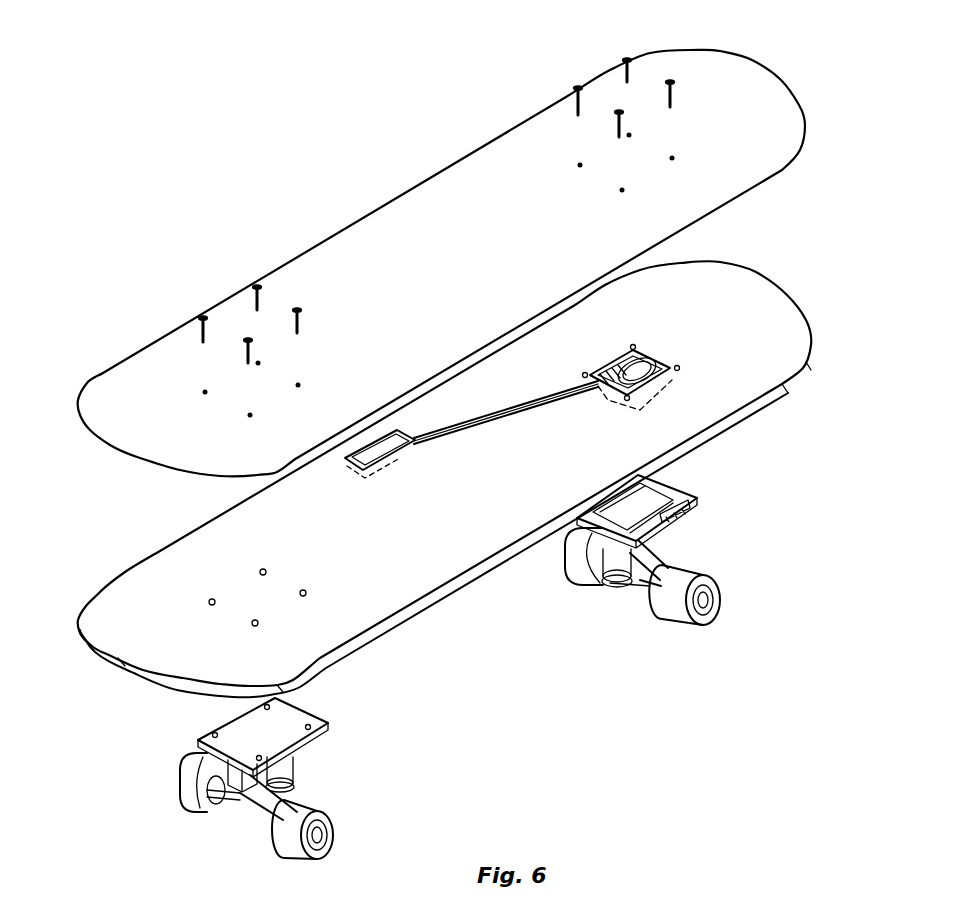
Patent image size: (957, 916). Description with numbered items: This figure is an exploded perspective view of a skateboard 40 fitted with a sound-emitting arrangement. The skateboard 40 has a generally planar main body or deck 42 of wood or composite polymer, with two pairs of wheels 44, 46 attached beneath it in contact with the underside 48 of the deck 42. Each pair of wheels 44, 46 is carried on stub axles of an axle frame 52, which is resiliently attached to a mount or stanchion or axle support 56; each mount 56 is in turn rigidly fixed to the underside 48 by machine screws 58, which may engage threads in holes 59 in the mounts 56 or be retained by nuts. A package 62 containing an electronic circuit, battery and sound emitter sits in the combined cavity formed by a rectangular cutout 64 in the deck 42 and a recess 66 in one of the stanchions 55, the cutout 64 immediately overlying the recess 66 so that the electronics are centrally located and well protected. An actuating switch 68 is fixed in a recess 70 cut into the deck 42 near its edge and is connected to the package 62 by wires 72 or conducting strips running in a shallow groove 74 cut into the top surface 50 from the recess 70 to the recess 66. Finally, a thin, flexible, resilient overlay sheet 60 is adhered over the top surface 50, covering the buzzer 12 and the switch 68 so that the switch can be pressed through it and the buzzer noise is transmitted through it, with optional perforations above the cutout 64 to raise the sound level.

The skateboard 40 is at (300, 50).
The deck 42 is at (430, 457).
The pair of wheels 44 is at (556, 560).
The pair of wheels 46 is at (188, 805).
The underside 48 is at (430, 616).
The top surface 50 is at (750, 293).
The axle frame 52 is at (622, 587).
The stanchion 55 is at (690, 508).
The mount 56 is at (310, 742).
The machine screws 58 is at (572, 96).
The holes 59 is at (283, 710).
The flexible overlay sheet 60 is at (400, 195).
The package 62 is at (647, 357).
The rectangular cutout 64 is at (644, 394).
The recess 66 is at (642, 505).
The actuating switch 68 is at (385, 463).
The recess 70 is at (353, 466).
The wires 72 is at (473, 425).
The groove 74 is at (533, 407).
The buzzer 12 is at (655, 396).